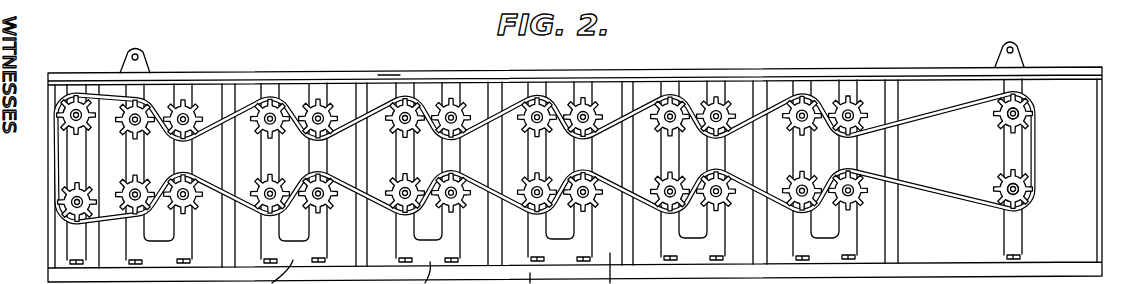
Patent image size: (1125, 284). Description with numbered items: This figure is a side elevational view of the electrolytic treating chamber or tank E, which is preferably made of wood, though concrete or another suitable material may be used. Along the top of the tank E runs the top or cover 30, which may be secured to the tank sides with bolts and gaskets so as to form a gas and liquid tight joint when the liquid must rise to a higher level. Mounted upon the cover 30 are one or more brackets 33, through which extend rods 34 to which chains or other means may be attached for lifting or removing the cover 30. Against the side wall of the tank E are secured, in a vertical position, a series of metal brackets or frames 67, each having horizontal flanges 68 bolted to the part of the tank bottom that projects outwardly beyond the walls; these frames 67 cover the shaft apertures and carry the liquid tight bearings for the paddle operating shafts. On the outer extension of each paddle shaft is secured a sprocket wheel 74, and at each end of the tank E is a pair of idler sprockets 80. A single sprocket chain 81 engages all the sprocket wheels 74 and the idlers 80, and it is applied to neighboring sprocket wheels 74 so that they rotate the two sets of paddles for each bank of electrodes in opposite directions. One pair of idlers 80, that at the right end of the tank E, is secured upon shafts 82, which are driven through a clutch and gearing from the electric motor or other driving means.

The top or cover 30 is at (178, 78).
The bracket 33 is at (125, 62).
The rod 34 is at (137, 50).
The metal bracket or frame 67 is at (295, 110).
The sprocket wheel 74 is at (405, 108).
The idler sprocket 80 is at (62, 113).
The sprocket chain 81 is at (210, 120).
The shaft 82 is at (1015, 112).
The horizontal flange 68 is at (833, 262).
The electrolytic treating chamber or tank E is at (382, 75).